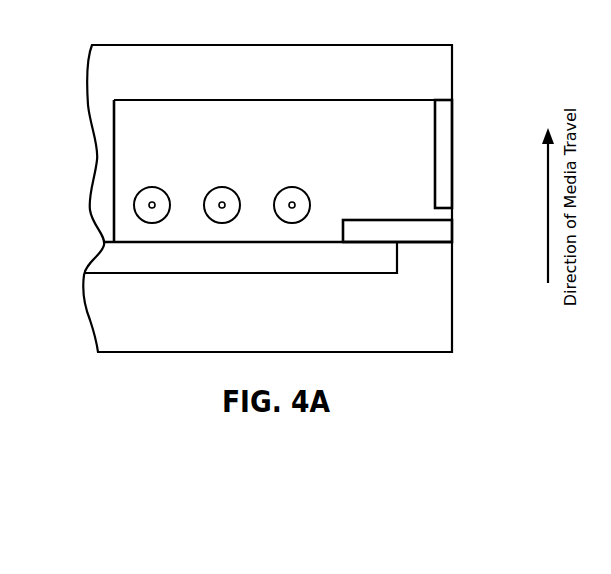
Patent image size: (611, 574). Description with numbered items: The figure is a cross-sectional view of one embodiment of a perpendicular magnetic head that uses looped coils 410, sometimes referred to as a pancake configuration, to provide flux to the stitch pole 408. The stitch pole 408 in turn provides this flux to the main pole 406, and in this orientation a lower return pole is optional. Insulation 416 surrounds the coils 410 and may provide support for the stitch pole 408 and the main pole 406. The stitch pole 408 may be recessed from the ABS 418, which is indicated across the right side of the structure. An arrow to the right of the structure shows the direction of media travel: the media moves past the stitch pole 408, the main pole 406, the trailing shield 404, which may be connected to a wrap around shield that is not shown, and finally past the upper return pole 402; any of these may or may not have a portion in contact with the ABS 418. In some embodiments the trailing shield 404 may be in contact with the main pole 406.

The upper return pole 402 is at (283, 81).
The trailing shield 404 is at (453, 137).
The main pole 406 is at (453, 229).
The stitch pole 408 is at (240, 257).
The looped coils 410 is at (149, 188).
The insulation 416 is at (278, 171).
The ABS 418 is at (455, 63).